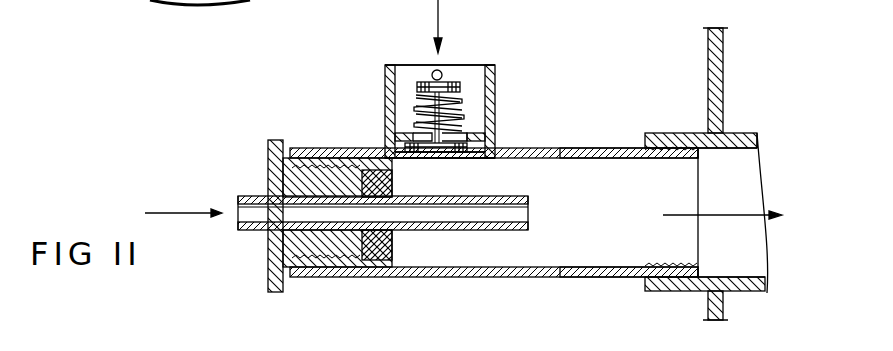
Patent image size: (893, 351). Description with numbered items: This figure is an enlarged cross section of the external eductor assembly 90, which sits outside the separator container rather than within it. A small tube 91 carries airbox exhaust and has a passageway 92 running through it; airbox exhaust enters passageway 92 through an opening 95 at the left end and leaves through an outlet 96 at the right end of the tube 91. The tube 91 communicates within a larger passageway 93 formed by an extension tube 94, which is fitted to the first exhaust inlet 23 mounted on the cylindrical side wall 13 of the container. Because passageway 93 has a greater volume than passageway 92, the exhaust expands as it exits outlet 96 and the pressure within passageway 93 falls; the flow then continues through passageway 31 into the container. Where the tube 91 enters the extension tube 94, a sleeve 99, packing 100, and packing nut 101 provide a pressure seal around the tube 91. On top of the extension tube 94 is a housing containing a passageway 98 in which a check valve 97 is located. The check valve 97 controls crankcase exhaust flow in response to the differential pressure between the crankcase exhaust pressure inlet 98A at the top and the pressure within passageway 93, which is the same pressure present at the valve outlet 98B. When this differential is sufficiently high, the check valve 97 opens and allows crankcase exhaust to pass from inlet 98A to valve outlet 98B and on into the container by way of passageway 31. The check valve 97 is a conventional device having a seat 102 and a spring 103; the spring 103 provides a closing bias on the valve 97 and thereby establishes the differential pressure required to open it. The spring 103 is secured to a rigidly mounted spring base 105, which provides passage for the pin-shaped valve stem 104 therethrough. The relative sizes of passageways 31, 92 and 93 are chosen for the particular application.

The cylindrical side wall 13 is at (712, 83).
The first exhaust inlet 23 is at (738, 133).
The passageway 31 is at (749, 256).
The external eductor assembly 90 is at (477, 279).
The small tube 91 is at (505, 232).
The passageway 92 is at (471, 219).
The passageway 93 is at (612, 168).
The extension tube 94 is at (614, 278).
The opening 95 is at (240, 203).
The outlet 96 is at (528, 210).
The check valve 97 is at (462, 152).
The passageway 98 is at (395, 80).
The crankcase exhaust pressure inlet 98A is at (408, 66).
The valve outlet 98B is at (404, 158).
The sleeve 99 is at (372, 251).
The packing 100 is at (381, 261).
The packing nut 101 is at (270, 160).
The seat 102 is at (402, 135).
The spring 103 is at (465, 109).
The valve stem 104 is at (441, 70).
The spring base 105 is at (462, 88).